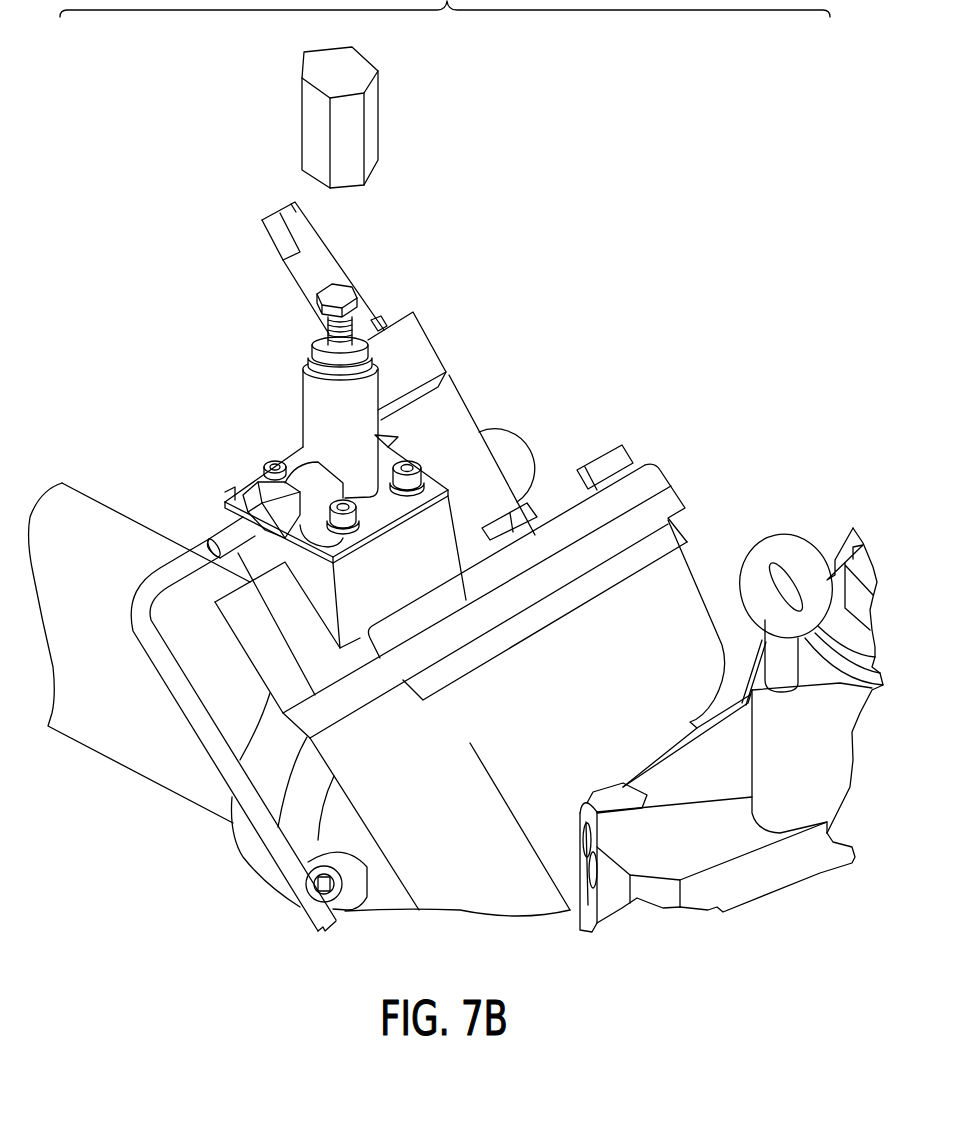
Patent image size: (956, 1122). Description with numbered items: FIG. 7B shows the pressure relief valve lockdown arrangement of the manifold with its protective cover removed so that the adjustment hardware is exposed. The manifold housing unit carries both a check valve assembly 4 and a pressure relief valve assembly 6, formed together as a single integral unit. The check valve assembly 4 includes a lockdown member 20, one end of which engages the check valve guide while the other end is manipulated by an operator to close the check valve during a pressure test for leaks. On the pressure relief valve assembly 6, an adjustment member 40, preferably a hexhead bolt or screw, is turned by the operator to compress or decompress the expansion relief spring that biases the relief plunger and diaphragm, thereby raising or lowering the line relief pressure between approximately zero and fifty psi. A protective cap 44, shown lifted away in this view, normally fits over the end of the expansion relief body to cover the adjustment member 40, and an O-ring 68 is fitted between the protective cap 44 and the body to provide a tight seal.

The check valve assembly 4 is at (497, 359).
The pressure relief valve assembly 6 is at (241, 432).
The lockdown member 20 is at (286, 270).
The adjustment member 40 is at (368, 279).
The protective cap 44 is at (392, 77).
The O-ring 68 is at (306, 370).